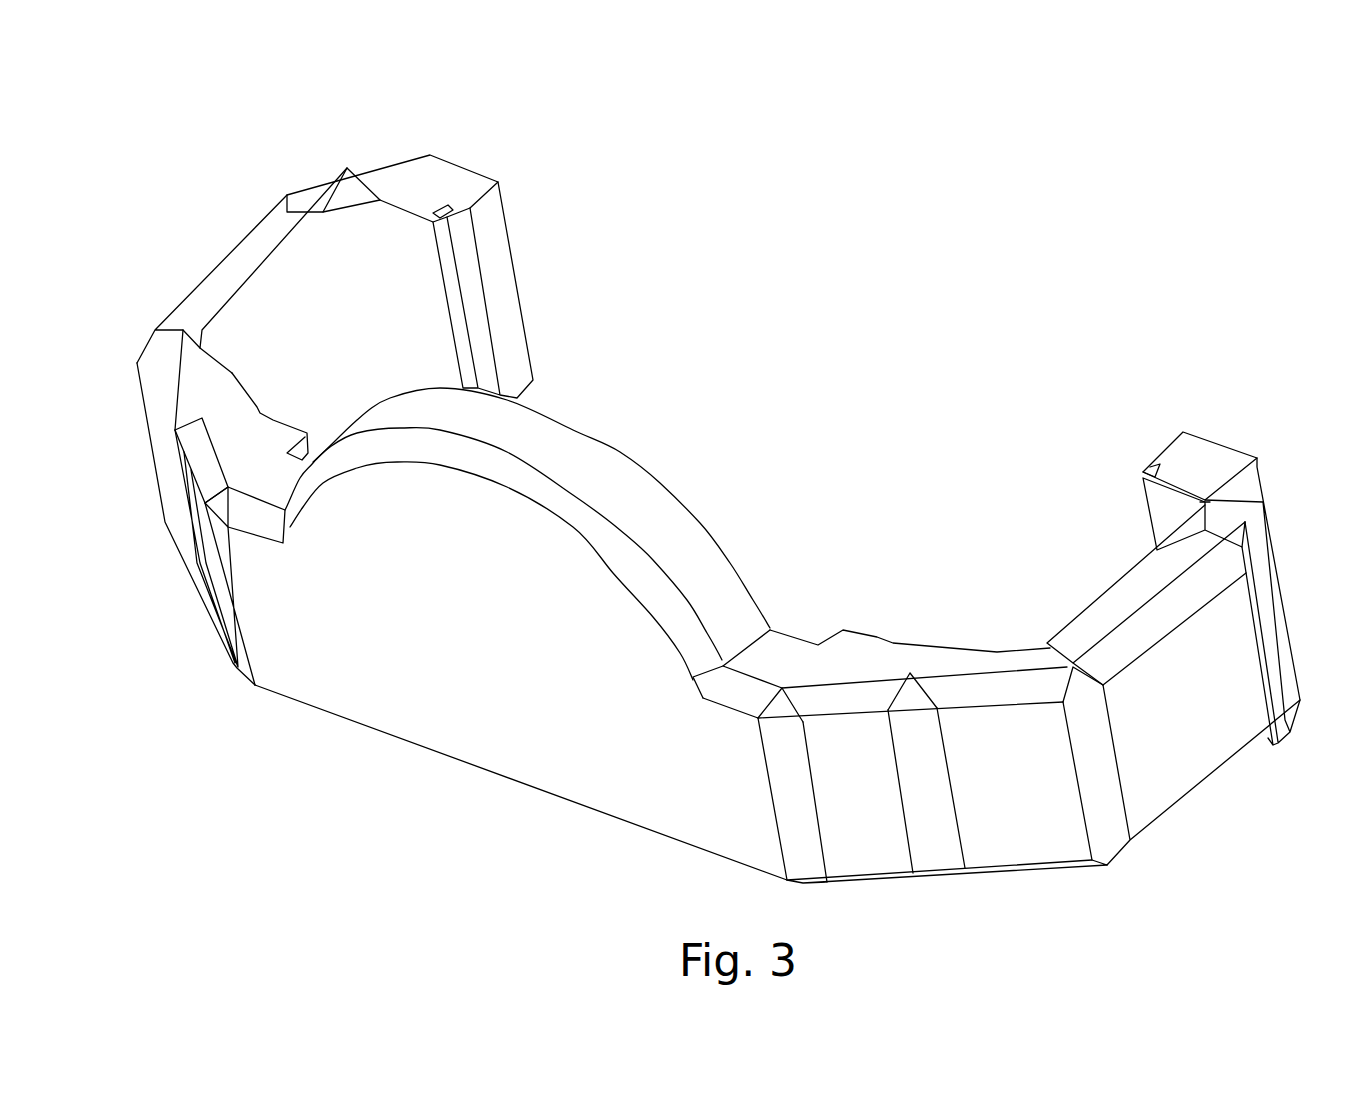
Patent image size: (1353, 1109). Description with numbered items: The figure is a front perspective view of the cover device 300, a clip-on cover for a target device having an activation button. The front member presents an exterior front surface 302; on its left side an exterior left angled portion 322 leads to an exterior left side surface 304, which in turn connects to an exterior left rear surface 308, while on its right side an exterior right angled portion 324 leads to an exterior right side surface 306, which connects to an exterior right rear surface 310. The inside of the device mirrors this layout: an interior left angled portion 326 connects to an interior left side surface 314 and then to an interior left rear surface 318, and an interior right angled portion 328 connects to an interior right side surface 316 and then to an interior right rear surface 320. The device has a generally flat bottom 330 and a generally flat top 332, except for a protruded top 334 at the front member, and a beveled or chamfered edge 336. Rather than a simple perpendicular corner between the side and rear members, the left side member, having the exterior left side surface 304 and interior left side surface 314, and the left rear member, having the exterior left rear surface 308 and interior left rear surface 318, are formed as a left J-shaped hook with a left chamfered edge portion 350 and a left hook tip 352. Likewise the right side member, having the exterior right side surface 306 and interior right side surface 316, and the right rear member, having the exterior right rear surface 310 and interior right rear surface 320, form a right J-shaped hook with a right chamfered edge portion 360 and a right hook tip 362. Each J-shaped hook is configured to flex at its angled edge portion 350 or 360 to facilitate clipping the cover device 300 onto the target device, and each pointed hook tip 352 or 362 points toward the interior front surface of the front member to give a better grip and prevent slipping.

The cover device 300 is at (215, 100).
The exterior front surface 302 is at (427, 657).
The exterior left side surface 304 is at (1183, 717).
The exterior right side surface 306 is at (198, 293).
The exterior left rear surface 308 is at (1215, 440).
The exterior right rear surface 310 is at (452, 160).
The interior left side surface 314 is at (1093, 602).
The interior right side surface 316 is at (305, 310).
The interior left rear surface 318 is at (1193, 487).
The interior right rear surface 320 is at (427, 263).
The exterior left angled portion 322 is at (986, 775).
The exterior right angled portion 324 is at (178, 472).
The interior left angled portion 326 is at (897, 640).
The interior right angled portion 328 is at (228, 372).
The generally flat bottom 330 is at (500, 773).
The generally flat top 332 is at (780, 665).
The protruded top 334 is at (548, 455).
The chamfered edge 336 is at (550, 507).
The left angled edge portion 350 is at (1228, 490).
The left hook tip 352 is at (1163, 468).
The right angled edge portion 360 is at (375, 195).
The right hook tip 362 is at (447, 200).